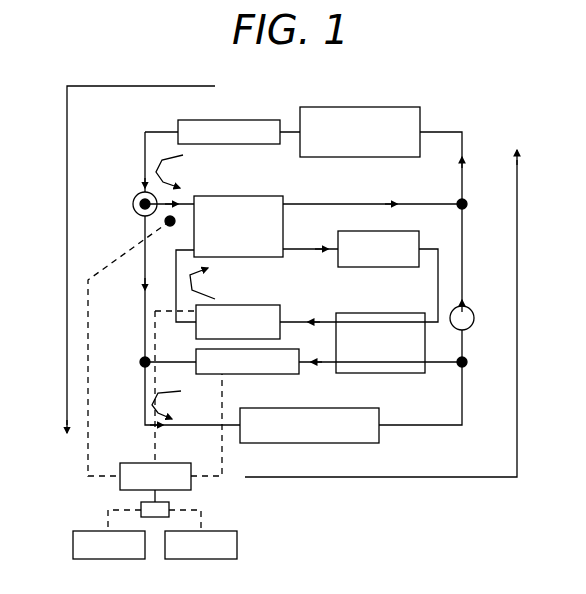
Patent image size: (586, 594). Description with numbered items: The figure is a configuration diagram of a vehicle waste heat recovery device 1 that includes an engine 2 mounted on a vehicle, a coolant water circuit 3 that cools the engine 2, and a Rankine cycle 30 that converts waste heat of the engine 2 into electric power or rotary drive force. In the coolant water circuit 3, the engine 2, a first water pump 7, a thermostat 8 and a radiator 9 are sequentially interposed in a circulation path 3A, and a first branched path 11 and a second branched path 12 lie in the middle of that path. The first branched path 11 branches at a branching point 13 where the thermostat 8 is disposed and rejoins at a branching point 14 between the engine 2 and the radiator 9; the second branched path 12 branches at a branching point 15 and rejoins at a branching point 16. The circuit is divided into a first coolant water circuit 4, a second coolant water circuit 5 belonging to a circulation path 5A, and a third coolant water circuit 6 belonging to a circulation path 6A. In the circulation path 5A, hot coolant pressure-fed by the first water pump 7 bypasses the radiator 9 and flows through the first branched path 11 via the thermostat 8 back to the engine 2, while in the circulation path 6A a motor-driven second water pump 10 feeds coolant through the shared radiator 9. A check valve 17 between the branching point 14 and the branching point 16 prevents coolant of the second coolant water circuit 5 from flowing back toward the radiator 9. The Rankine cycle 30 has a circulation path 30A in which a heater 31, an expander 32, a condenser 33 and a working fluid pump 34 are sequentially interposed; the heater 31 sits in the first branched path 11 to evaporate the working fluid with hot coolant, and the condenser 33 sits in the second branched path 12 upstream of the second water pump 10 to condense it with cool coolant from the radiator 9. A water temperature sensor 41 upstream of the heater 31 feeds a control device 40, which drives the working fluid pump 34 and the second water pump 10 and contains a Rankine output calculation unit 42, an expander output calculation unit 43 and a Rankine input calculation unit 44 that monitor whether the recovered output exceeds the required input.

The vehicle waste heat recovery device 1 is at (299, 85).
The engine 2 is at (388, 125).
The coolant water circuit 3 is at (440, 118).
The circulation path 3A is at (66, 303).
The first coolant water circuit 4 is at (140, 407).
The second coolant water circuit 5 is at (466, 144).
The circulation path 5A is at (425, 198).
The third coolant water circuit 6 is at (466, 400).
The circulation path 6A is at (430, 382).
The first water pump 7 is at (212, 128).
The thermostat 8 is at (133, 201).
The radiator 9 is at (371, 418).
The second water pump 10 is at (288, 362).
The first branched path 11 is at (353, 205).
The second branched path 12 is at (169, 364).
The branching point 13 is at (138, 212).
The branching point 14 is at (476, 217).
The branching point 15 is at (131, 299).
The branching point 16 is at (476, 364).
The check valve 17 is at (474, 318).
The Rankine cycle 30 is at (448, 272).
The circulation path 30A is at (405, 283).
The heater 31 is at (259, 202).
The expander 32 is at (415, 236).
The condenser 33 is at (417, 358).
The working fluid pump 34 is at (195, 328).
The control device 40 is at (144, 471).
The water temperature sensor 41 is at (166, 238).
The Rankine output calculation unit 42 is at (142, 509).
The expander output calculation unit 43 is at (91, 544).
The Rankine input calculation unit 44 is at (207, 546).